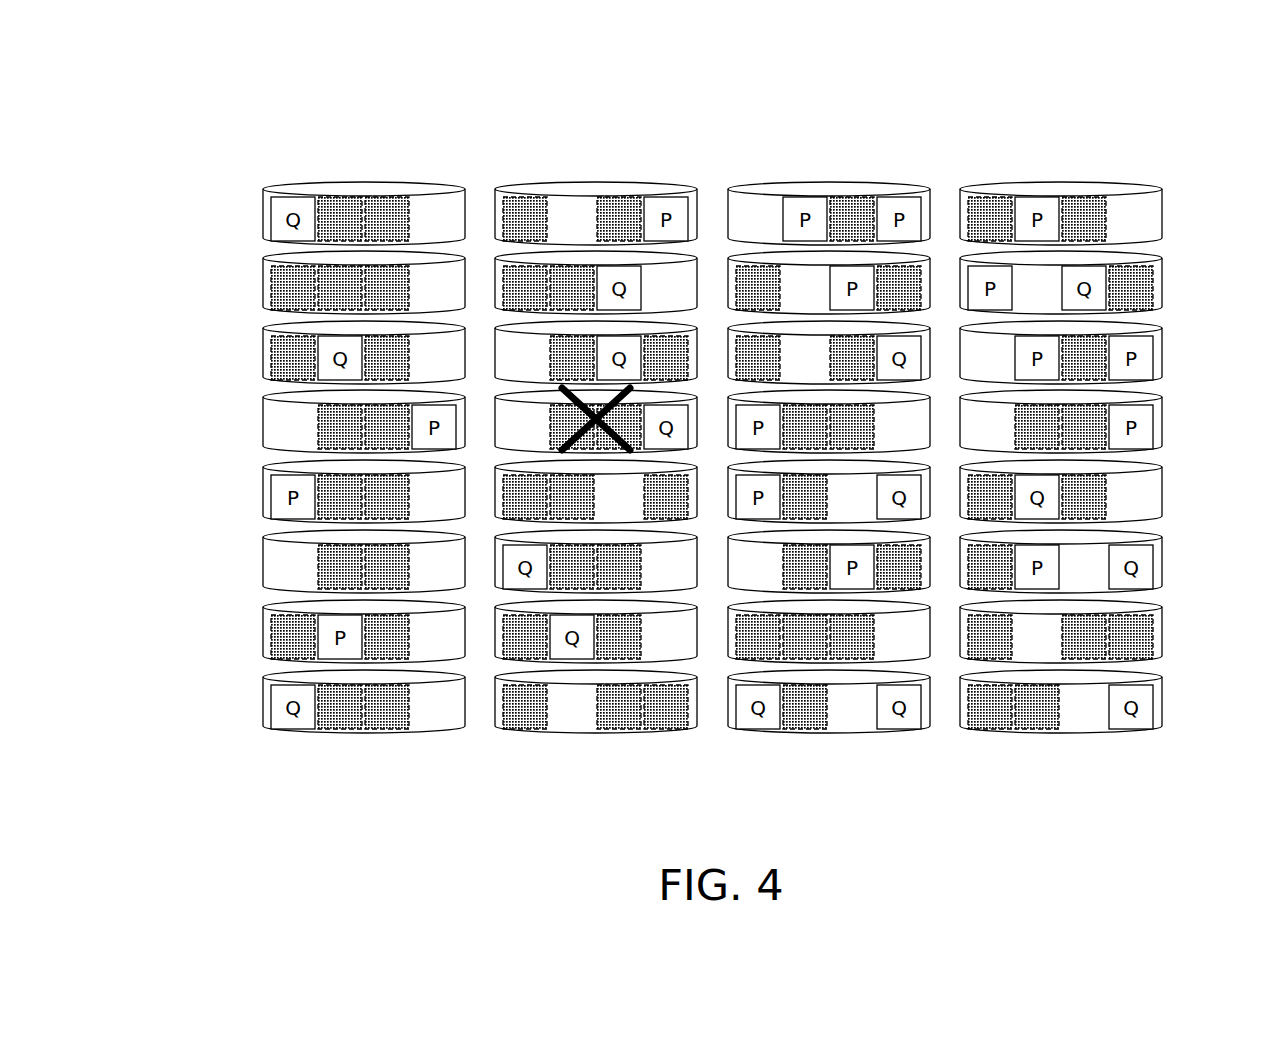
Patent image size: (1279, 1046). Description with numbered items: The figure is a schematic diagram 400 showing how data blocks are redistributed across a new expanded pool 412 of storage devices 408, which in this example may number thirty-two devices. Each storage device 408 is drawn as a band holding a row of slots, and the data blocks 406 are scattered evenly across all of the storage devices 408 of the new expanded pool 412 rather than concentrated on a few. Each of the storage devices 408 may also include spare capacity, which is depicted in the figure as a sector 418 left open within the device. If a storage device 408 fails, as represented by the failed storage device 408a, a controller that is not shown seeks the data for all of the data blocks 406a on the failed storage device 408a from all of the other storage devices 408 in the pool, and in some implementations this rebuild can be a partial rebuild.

The schematic diagram 400 is at (158, 77).
The new expanded pool 412 is at (1158, 103).
The storage device 408 is at (263, 212).
The failed storage device 408a is at (697, 420).
The data block 406 is at (341, 729).
The data block on failed storage device 406a is at (388, 366).
The sector 418 is at (575, 724).